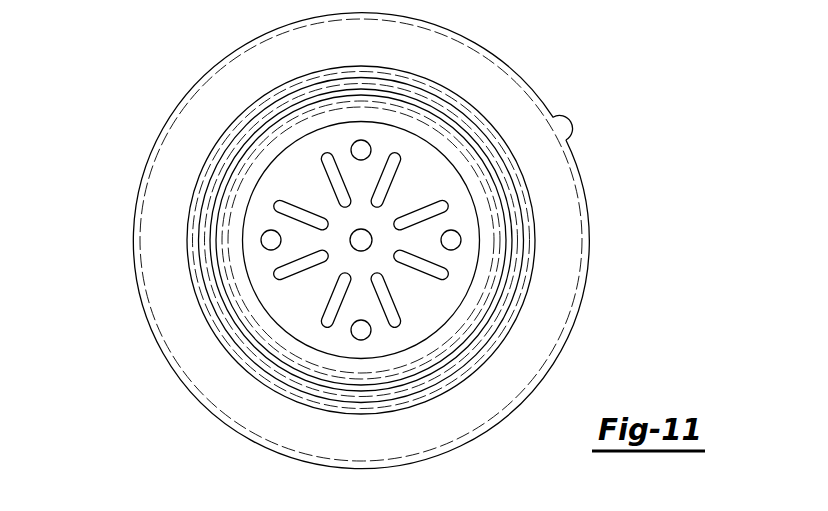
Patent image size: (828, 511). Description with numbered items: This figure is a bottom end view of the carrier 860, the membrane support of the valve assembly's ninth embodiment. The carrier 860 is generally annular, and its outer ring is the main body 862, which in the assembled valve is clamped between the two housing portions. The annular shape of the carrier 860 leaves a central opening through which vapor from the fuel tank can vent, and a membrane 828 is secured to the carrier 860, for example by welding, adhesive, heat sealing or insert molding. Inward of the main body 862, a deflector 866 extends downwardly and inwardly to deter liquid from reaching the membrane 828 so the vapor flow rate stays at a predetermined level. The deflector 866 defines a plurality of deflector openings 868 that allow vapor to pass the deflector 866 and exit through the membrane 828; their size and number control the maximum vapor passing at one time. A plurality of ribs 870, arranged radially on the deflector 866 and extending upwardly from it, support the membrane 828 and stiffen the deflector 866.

The carrier 860 is at (122, 78).
The main body 862 is at (220, 85).
The membrane 828 is at (496, 241).
The deflector 866 is at (265, 197).
The deflector opening 868 is at (271, 240).
The rib 870 is at (297, 276).